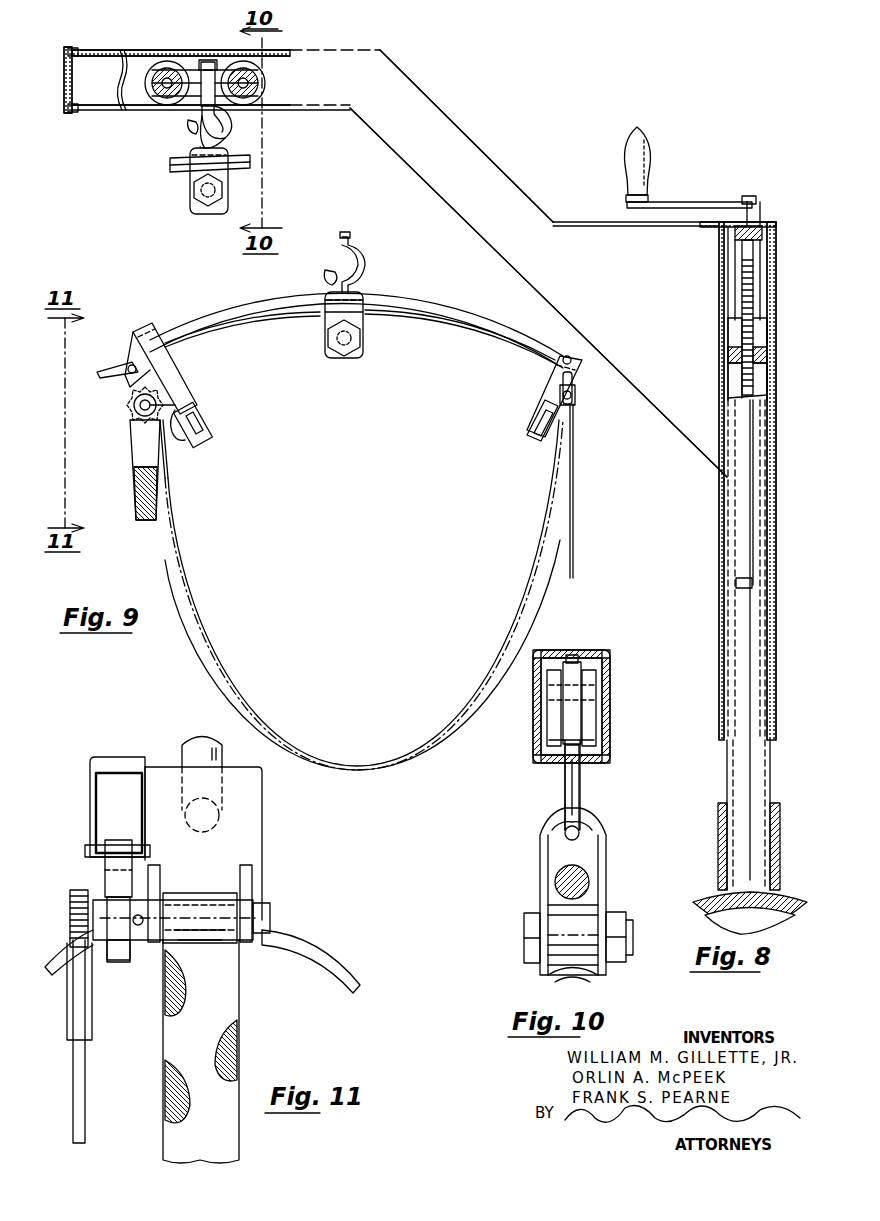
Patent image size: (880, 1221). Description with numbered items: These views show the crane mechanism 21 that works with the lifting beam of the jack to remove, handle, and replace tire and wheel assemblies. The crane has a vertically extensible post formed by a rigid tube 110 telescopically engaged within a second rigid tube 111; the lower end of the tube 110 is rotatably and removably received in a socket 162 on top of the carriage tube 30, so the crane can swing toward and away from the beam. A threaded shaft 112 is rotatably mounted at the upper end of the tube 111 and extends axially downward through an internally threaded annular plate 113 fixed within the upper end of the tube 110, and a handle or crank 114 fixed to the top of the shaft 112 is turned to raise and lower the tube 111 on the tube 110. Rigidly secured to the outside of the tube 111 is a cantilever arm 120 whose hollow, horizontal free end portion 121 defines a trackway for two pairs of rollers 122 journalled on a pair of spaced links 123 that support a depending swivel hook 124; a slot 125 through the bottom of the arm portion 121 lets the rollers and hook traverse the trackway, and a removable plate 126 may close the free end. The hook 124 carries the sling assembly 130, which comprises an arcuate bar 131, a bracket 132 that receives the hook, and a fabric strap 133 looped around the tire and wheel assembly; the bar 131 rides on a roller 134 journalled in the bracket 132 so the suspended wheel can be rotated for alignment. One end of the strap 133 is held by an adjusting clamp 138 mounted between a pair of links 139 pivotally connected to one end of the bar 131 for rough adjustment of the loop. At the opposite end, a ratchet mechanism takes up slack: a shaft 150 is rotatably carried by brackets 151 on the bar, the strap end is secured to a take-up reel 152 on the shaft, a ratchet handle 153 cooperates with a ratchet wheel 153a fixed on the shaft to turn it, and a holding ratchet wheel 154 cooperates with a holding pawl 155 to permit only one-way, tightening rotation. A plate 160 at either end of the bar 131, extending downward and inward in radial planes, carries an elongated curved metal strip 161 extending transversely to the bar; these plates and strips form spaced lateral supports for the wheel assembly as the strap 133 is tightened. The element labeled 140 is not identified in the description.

In FIG. 8, the crane mechanism 21 is at (678, 191).
In FIG. 8, the carriage tube 30 is at (715, 892).
In FIG. 8, the rigid tube 110 is at (727, 780).
In FIG. 8, the second rigid tube 111 is at (722, 620).
In FIG. 8, the threaded shaft 112 is at (738, 283).
In FIG. 8, the annular plate 113 is at (777, 357).
In FIG. 8, the crank 114 is at (627, 143).
In FIG. 8, the cantilever arm 120 is at (497, 166).
In FIG. 8, the free end portion 121 is at (366, 58).
In FIG. 10, the free end portion 121 is at (576, 650).
In FIG. 8, the rollers 122 is at (172, 96).
In FIG. 10, the rollers 122 is at (552, 720).
In FIG. 8, the links 123 is at (206, 64).
In FIG. 8, the swivel hook 124 is at (228, 140).
In FIG. 9, the swivel hook 124 is at (368, 270).
In FIG. 8, the slot 125 is at (104, 110).
In FIG. 10, the slot 125 is at (558, 775).
In FIG. 8, the removable plate 126 is at (64, 60).
In FIG. 9, the sling assembly 130 is at (383, 301).
In FIG. 8, the arcuate bar 131 is at (178, 175).
In FIG. 9, the arcuate bar 131 is at (242, 318).
In FIG. 10, the arcuate bar 131 is at (560, 882).
In FIG. 11, the arcuate bar 131 is at (182, 750).
In FIG. 8, the bracket 132 is at (198, 212).
In FIG. 9, the bracket 132 is at (355, 360).
In FIG. 10, the bracket 132 is at (540, 882).
In FIG. 9, the fabric strap 133 is at (186, 584).
In FIG. 11, the fabric strap 133 is at (240, 1038).
In FIG. 8, the roller 134 is at (190, 196).
In FIG. 9, the roller 134 is at (338, 360).
In FIG. 10, the roller 134 is at (552, 980).
In FIG. 9, the adjusting clamp 138 is at (573, 398).
In FIG. 9, the links 139 is at (560, 363).
In FIG. 9, the link 140 is at (575, 380).
In FIG. 9, the shaft 150 is at (172, 403).
In FIG. 11, the shaft 150 is at (266, 912).
In FIG. 9, the brackets 151 is at (180, 432).
In FIG. 11, the brackets 151 is at (160, 880).
In FIG. 11, the take-up reel 152 is at (207, 947).
In FIG. 9, the ratchet handle 153 is at (135, 456).
In FIG. 11, the ratchet handle 153 is at (85, 1058).
In FIG. 11, the ratchet wheel 153a is at (78, 920).
In FIG. 9, the holding ratchet wheel 154 is at (138, 410).
In FIG. 11, the holding ratchet wheel 154 is at (120, 963).
In FIG. 9, the holding pawl 155 is at (130, 378).
In FIG. 11, the holding pawl 155 is at (118, 850).
In FIG. 9, the plate 160 is at (165, 372).
In FIG. 11, the plate 160 is at (250, 832).
In FIG. 9, the curved metal strip 161 is at (213, 422).
In FIG. 11, the curved metal strip 161 is at (332, 957).
In FIG. 8, the socket 162 is at (718, 840).